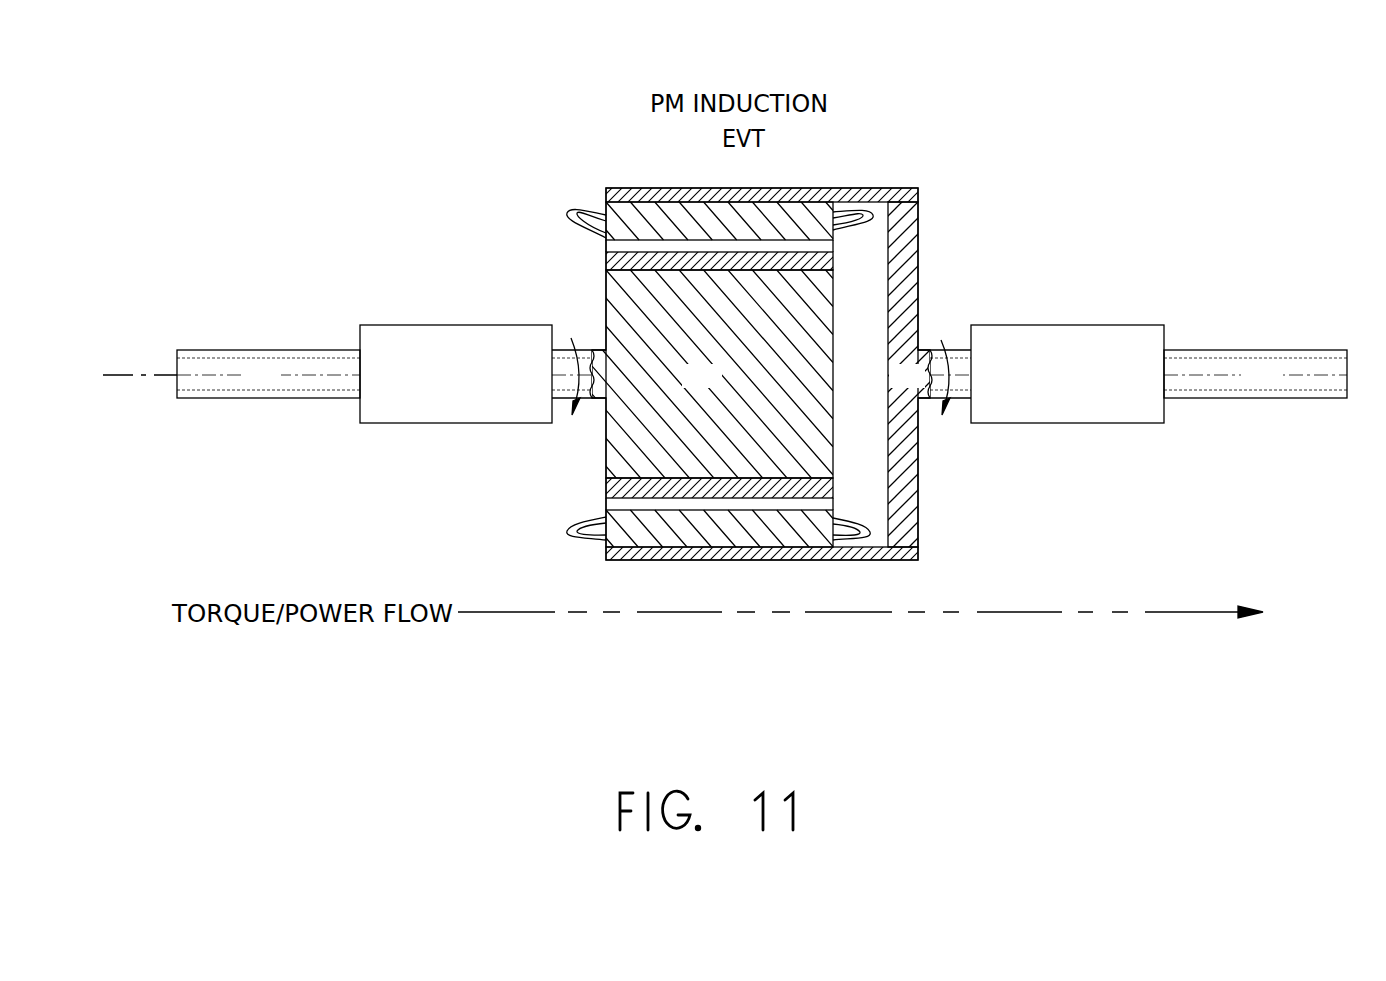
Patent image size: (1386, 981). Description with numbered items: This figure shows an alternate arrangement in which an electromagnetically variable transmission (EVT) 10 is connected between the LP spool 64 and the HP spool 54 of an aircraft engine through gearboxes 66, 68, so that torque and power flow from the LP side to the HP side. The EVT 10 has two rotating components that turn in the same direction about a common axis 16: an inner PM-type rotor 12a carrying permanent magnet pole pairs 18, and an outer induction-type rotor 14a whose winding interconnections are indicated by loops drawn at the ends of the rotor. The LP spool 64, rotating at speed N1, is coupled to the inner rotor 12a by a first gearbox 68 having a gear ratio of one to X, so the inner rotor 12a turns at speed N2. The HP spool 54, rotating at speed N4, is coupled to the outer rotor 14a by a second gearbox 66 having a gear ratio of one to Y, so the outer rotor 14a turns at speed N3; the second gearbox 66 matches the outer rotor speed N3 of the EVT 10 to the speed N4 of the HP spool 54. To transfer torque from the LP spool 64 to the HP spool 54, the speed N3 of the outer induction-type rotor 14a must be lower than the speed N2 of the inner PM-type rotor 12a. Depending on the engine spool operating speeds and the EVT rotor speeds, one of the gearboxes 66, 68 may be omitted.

The electromagnetically variable transmission (EVT) 10 is at (1023, 107).
The inner PM-type rotor 12a is at (606, 287).
The outer induction-type rotor 14a is at (918, 228).
The common axis 16 is at (123, 373).
The permanent magnet pole pairs 18 is at (805, 212).
The HP spool 54 is at (1325, 350).
The LP spool 64 is at (200, 350).
The second gearbox 66 is at (1008, 325).
The first gearbox 68 is at (448, 325).